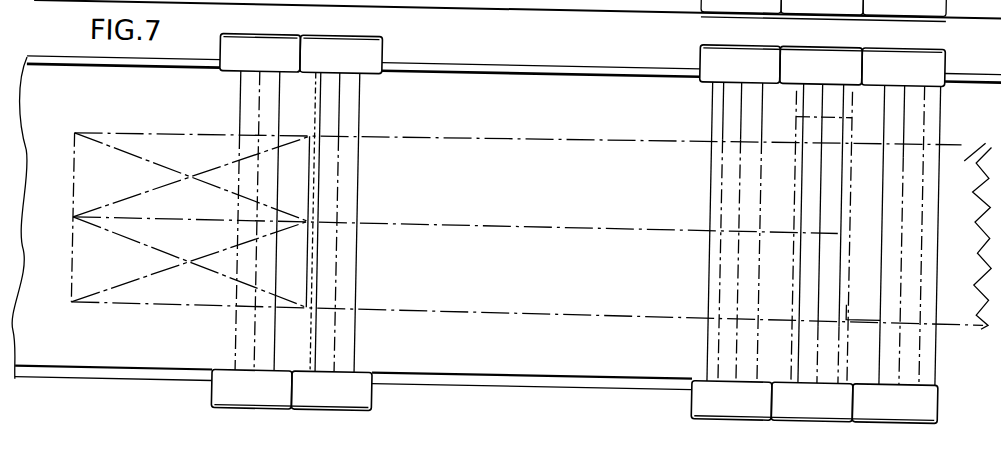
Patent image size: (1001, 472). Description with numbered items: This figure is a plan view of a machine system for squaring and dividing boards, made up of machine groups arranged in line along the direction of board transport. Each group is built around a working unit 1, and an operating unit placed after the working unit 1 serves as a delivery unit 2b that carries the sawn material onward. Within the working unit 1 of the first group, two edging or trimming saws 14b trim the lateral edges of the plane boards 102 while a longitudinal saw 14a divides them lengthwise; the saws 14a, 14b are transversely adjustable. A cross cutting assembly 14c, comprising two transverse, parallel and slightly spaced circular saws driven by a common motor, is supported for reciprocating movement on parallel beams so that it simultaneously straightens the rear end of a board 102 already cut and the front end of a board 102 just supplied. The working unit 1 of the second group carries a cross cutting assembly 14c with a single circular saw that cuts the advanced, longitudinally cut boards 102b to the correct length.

The working unit 1 is at (333, 48).
The delivery unit 2b is at (243, 49).
The longitudinal saw 14a is at (833, 216).
The edging or trimming saws 14b is at (823, 140).
The cross cutting assembly 14c is at (313, 99).
The board 102 is at (985, 119).
The longitudinally cut board 102b is at (126, 140).